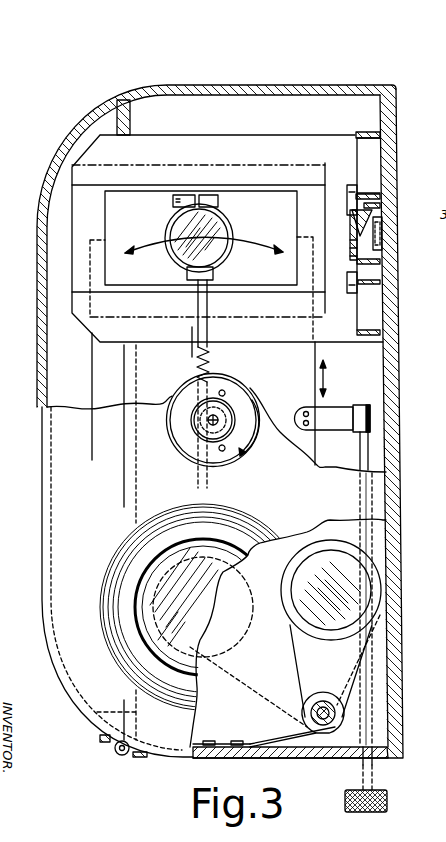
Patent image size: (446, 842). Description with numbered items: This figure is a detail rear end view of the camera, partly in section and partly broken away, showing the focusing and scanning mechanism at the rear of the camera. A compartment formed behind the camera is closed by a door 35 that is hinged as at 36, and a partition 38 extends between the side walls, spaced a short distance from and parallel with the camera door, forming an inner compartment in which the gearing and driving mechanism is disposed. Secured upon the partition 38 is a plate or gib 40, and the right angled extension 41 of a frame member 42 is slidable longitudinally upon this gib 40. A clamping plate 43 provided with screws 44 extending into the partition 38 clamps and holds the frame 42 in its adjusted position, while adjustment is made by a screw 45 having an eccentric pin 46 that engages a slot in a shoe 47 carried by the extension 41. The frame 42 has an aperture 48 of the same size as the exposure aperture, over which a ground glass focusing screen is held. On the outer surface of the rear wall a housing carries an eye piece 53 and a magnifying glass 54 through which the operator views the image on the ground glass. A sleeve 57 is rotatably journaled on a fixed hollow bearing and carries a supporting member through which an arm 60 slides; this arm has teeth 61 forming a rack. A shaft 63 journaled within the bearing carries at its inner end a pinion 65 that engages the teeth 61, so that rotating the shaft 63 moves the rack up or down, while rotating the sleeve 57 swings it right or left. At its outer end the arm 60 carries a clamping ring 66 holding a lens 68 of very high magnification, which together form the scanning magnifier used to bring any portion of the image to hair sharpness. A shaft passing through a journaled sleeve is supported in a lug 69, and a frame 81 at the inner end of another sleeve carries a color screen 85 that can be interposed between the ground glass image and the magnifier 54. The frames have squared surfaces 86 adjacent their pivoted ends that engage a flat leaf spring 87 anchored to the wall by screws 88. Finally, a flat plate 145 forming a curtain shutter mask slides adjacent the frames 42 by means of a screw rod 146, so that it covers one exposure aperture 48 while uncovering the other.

The door 35 is at (203, 760).
The hinge 36 is at (115, 755).
The partition 38 is at (403, 580).
The plate or gib 40 is at (376, 220).
The right angled extension 41 is at (368, 160).
The frame member 42 is at (271, 142).
The clamping plate 43 is at (360, 263).
The screws 44 is at (347, 187).
The screw 45 is at (355, 237).
The eccentric pin 46 is at (350, 223).
The shoe 47 is at (373, 217).
The aperture 48 is at (281, 170).
The eye piece 53 is at (125, 568).
The magnifying glass 54 is at (163, 612).
The sleeve 57 is at (192, 418).
The arm 60 is at (208, 330).
The teeth 61 is at (209, 355).
The shaft 63 is at (230, 417).
The pinion 65 is at (237, 393).
The clamping ring 66 is at (230, 213).
The lens 68 is at (218, 230).
The lug 69 is at (185, 442).
The frame 81 is at (340, 655).
The color screen 85 is at (338, 567).
The squared surfaces 86 is at (307, 727).
The flat leaf spring 87 is at (325, 737).
The screws 88 is at (235, 742).
The flat plate 145 is at (323, 355).
The screw rod 146 is at (370, 450).